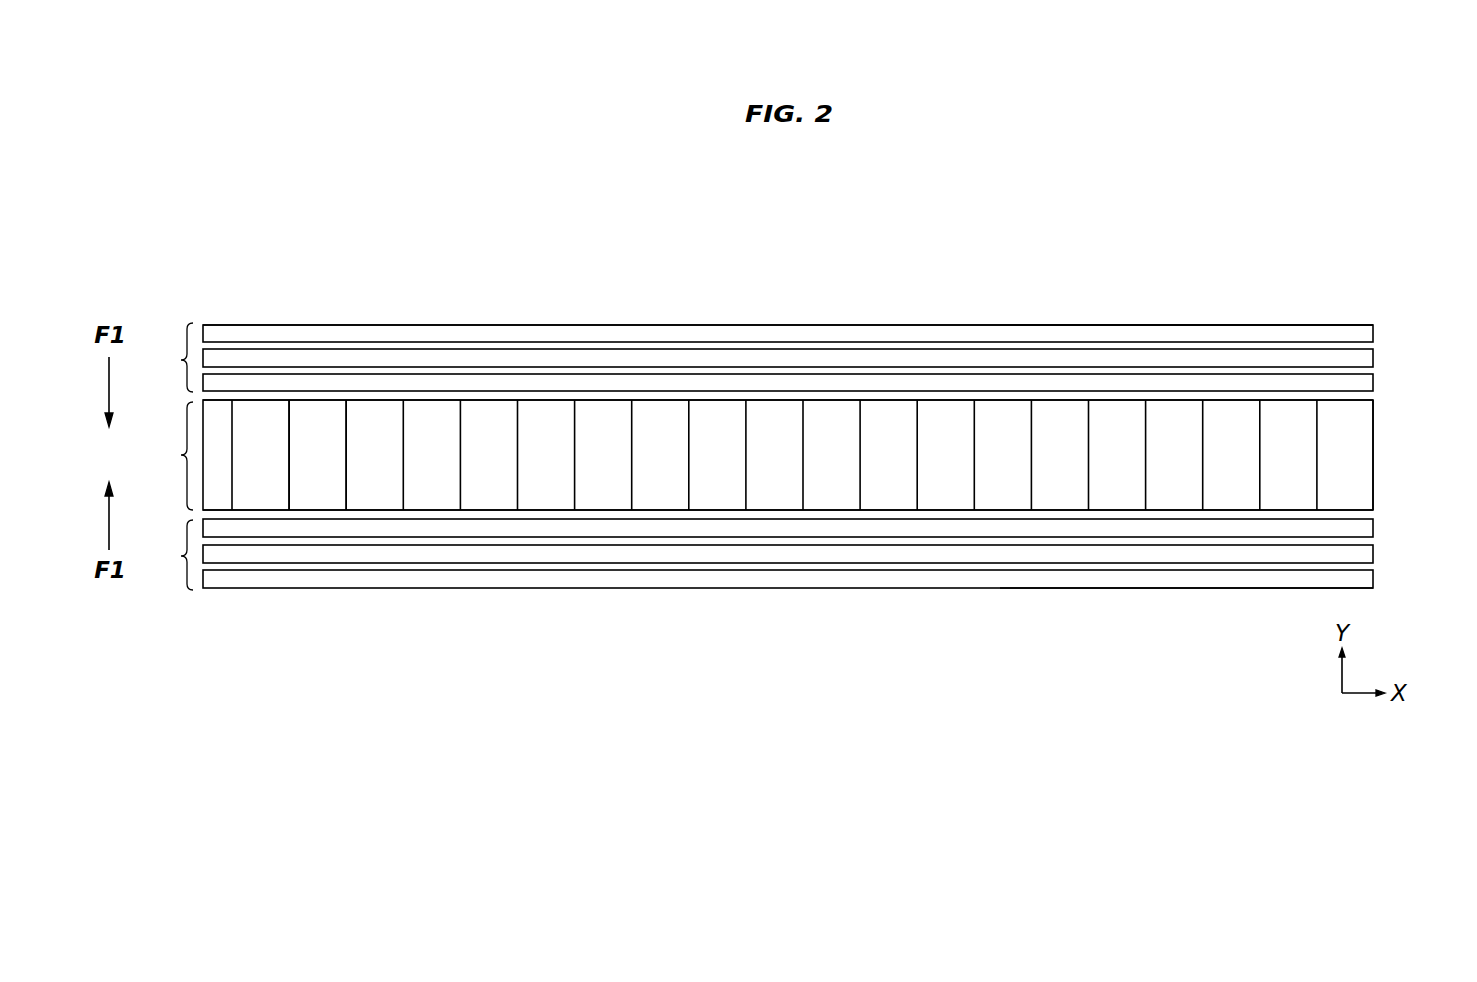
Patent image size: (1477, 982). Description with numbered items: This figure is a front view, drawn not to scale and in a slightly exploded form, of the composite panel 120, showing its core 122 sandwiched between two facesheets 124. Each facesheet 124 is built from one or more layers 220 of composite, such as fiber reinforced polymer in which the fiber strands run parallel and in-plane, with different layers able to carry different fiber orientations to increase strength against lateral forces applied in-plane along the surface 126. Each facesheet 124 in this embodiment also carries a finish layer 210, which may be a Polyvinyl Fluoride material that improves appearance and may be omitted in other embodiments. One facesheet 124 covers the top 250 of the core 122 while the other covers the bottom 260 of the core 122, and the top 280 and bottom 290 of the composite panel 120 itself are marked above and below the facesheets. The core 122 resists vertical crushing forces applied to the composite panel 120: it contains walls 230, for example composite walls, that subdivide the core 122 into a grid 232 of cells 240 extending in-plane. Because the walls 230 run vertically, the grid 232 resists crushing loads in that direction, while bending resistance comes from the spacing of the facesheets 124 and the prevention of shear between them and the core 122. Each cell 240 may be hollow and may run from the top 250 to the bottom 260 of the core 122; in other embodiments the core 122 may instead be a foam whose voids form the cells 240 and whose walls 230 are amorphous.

The composite panel 120 is at (946, 198).
The core 122 is at (803, 456).
The facesheet 124 is at (794, 453).
The surface 126 is at (700, 313).
The finish layer 210 is at (1365, 333).
The layer of composite 220 is at (1365, 360).
The wall 230 is at (289, 443).
The cell 240 is at (332, 424).
The top of core 250 is at (1382, 399).
The bottom of core 260 is at (1383, 516).
The grid 232 is at (1405, 433).
The top of composite panel 280 is at (1014, 296).
The bottom of composite panel 290 is at (1012, 612).